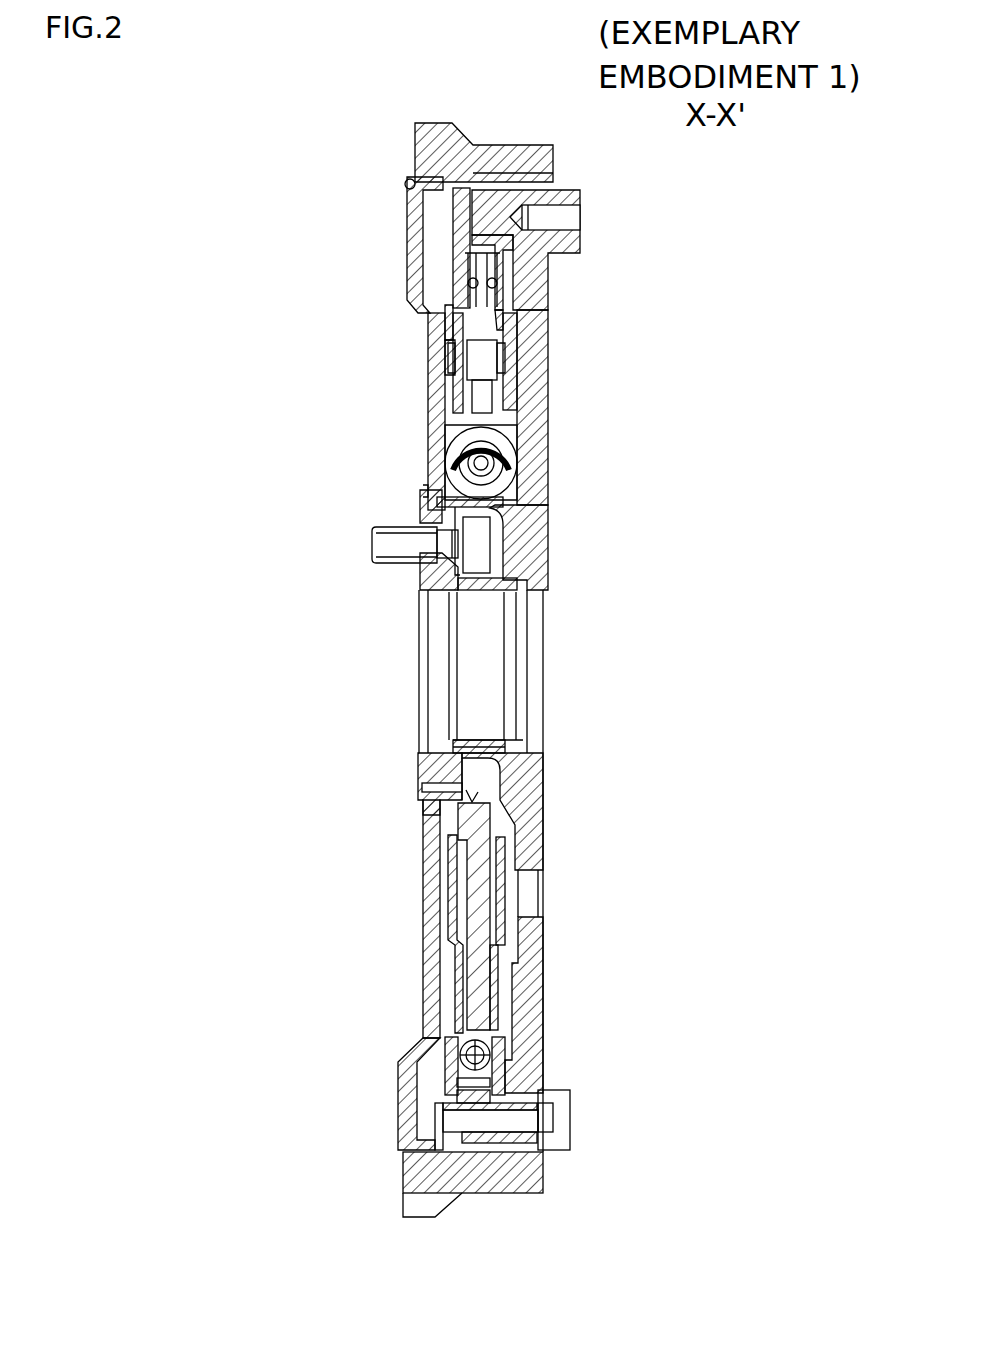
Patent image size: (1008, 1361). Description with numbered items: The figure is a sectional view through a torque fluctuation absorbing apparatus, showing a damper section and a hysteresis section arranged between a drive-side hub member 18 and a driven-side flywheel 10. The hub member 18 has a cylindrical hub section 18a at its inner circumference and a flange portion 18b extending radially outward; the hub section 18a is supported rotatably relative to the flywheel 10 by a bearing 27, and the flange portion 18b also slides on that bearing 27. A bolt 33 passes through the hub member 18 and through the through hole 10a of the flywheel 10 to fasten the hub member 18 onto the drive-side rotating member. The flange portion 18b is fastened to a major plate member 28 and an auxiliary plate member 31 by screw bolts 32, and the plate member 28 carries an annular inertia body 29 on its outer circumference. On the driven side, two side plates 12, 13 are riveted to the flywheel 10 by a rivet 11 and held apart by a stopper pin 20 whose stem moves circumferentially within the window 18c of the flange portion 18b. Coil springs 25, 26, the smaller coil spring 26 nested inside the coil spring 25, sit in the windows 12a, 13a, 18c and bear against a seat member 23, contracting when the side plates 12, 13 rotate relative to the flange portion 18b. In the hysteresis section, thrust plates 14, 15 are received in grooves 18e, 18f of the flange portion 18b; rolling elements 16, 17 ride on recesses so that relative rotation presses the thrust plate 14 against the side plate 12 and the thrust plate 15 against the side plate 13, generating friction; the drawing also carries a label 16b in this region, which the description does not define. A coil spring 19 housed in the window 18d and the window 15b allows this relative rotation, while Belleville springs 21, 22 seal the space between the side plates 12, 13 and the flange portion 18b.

The flywheel 10 is at (525, 852).
The through hole 10a is at (515, 545).
The rivet 11 is at (555, 1120).
The side plate 12 is at (505, 178).
The window 12a is at (515, 408).
The side plate 13 is at (455, 181).
The window 13a is at (445, 410).
The thrust plate 14 is at (548, 268).
The thrust plate 15 is at (458, 262).
The window 15b is at (505, 1040).
The rolling element 16 is at (525, 286).
The lower seal 16b is at (442, 1035).
The rolling element 17 is at (466, 281).
The hub member 18 is at (472, 800).
The hub section 18a is at (490, 745).
The flange portion 18b is at (447, 342).
The window 18c is at (456, 386).
The window 18d is at (427, 1053).
The groove 18e is at (500, 318).
The groove 18f is at (447, 308).
The coil spring 19 is at (482, 1056).
The stopper pin 20 is at (490, 357).
The Belleville spring 21 is at (505, 1003).
The Belleville spring 22 is at (447, 1010).
The seat member 23 is at (510, 433).
The coil spring 25 is at (510, 463).
The coil spring 26 is at (460, 462).
The bearing 27 is at (500, 750).
The plate member 28 is at (432, 935).
The inertia body 29 is at (535, 1175).
The plate member 31 is at (425, 813).
The screw bolt 32 is at (425, 787).
The bolt 33 is at (392, 545).